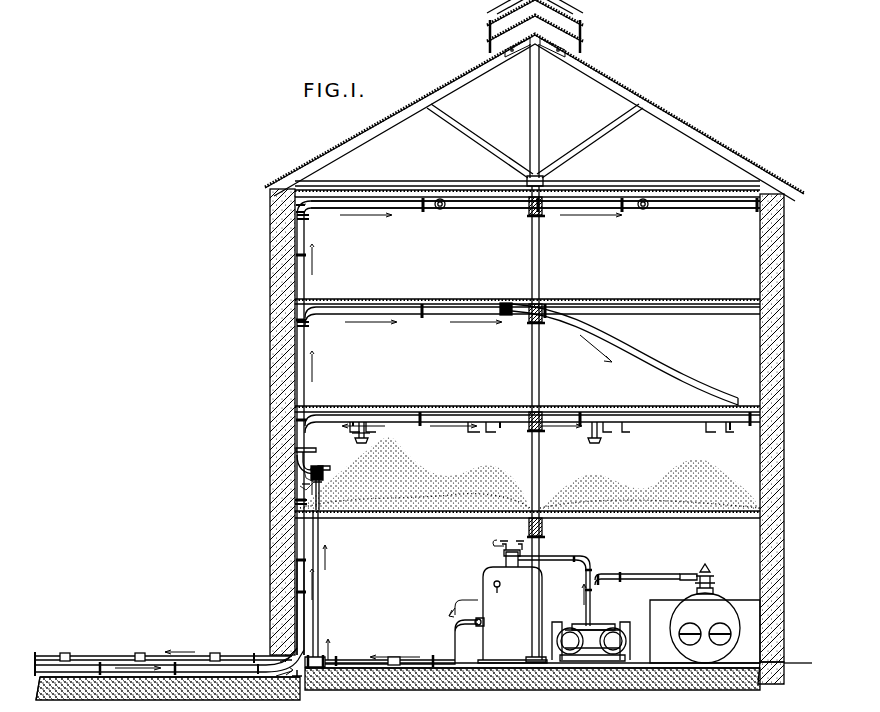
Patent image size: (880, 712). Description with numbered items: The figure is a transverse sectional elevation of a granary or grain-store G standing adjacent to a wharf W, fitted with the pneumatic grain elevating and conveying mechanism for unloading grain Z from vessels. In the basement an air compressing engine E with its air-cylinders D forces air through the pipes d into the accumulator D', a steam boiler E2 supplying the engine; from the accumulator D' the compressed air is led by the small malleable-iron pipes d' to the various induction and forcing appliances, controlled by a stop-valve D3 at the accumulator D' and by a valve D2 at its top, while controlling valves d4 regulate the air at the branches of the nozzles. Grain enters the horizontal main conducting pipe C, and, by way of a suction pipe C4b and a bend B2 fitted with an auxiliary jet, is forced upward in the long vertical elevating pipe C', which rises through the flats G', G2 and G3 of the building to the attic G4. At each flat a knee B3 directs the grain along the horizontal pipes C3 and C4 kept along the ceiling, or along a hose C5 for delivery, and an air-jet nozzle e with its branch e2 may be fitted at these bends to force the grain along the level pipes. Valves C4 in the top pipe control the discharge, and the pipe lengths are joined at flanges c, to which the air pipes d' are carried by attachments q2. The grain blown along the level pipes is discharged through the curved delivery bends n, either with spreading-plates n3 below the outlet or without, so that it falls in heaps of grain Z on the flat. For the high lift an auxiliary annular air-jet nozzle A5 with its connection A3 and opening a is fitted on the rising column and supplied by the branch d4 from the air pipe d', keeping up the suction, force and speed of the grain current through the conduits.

The granary G is at (424, 350).
The flat G' is at (530, 461).
The flat G2 is at (530, 355).
The flat G3 is at (530, 248).
The attic G4 is at (530, 120).
The grain Z is at (530, 473).
The main grain-conducting pipe C is at (298, 607).
The vertical elevating pipe C' is at (528, 428).
The horizontal grain pipe C3 is at (532, 311).
The horizontal grain pipe C4 is at (551, 201).
The hose C5 is at (619, 355).
The flanges c is at (587, 319).
The knee B3 is at (310, 268).
The bend B2 is at (308, 657).
The jet-nozzle e is at (304, 501).
The branch e2 is at (303, 200).
The delivery bend n is at (542, 431).
The spreading-plate n3 is at (477, 436).
The auxiliary annular air-jet nozzle A5 is at (268, 447).
The grain induction and forcing apparatus A3 is at (330, 460).
The nozzle opening a is at (309, 488).
The controlling valve d4 is at (329, 489).
The air-pressure pipe d' is at (256, 588).
The air pipe d is at (599, 589).
The coupling q2 is at (249, 657).
The suction pipe C4b is at (169, 662).
The wharf W is at (81, 694).
The accumulator D' is at (512, 615).
The safety valve D2 is at (505, 553).
The stop-valve D3 is at (466, 608).
The air-cylinder D is at (591, 641).
The air compressing engine E is at (588, 635).
The steam boiler E2 is at (705, 613).